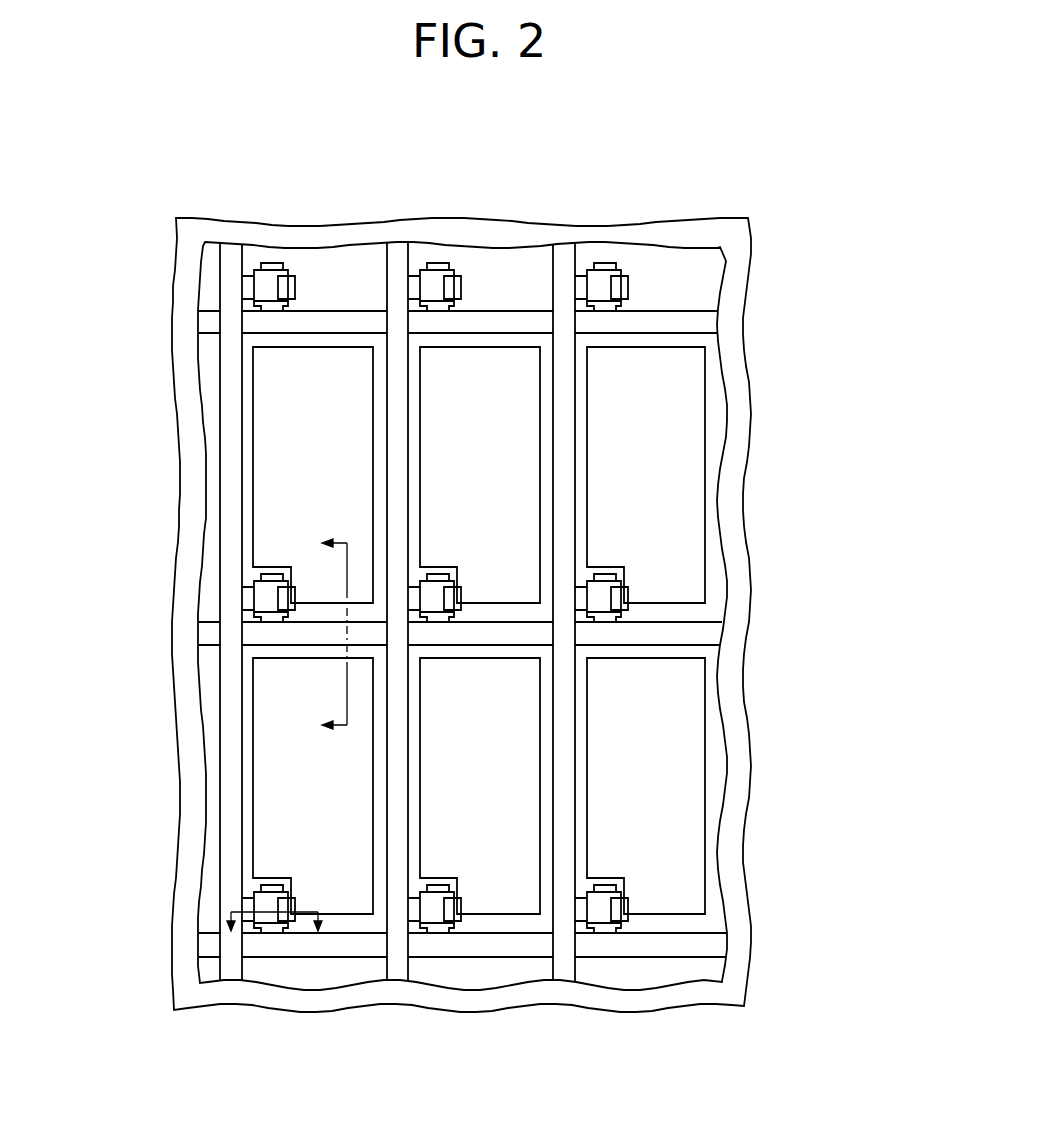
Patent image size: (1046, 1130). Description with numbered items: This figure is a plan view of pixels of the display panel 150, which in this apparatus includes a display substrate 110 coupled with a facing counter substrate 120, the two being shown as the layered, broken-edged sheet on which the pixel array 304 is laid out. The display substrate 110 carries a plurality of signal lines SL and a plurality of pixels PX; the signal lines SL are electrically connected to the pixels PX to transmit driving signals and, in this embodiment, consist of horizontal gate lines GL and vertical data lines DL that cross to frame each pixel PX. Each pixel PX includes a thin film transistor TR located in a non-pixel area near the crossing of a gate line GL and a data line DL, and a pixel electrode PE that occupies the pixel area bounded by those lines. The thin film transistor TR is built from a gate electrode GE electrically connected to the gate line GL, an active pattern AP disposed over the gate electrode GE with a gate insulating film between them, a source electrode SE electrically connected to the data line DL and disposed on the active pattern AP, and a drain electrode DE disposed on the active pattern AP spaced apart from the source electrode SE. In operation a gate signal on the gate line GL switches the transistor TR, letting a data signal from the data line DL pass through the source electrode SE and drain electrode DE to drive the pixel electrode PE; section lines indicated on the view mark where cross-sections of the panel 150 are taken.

The display panel pixel array 304 is at (698, 190).
The display panel 150 is at (840, 718).
The counter substrate 120 is at (750, 725).
The display substrate 110 is at (727, 778).
The signal lines SL is at (116, 262).
The data line DL is at (233, 273).
The gate line GL is at (207, 321).
The pixel PX is at (70, 1000).
The pixel electrode PE is at (270, 433).
The thin film transistor TR is at (116, 870).
The gate electrode GE is at (268, 887).
The drain electrode DE is at (280, 912).
The source electrode SE is at (272, 922).
The active pattern AP is at (274, 930).